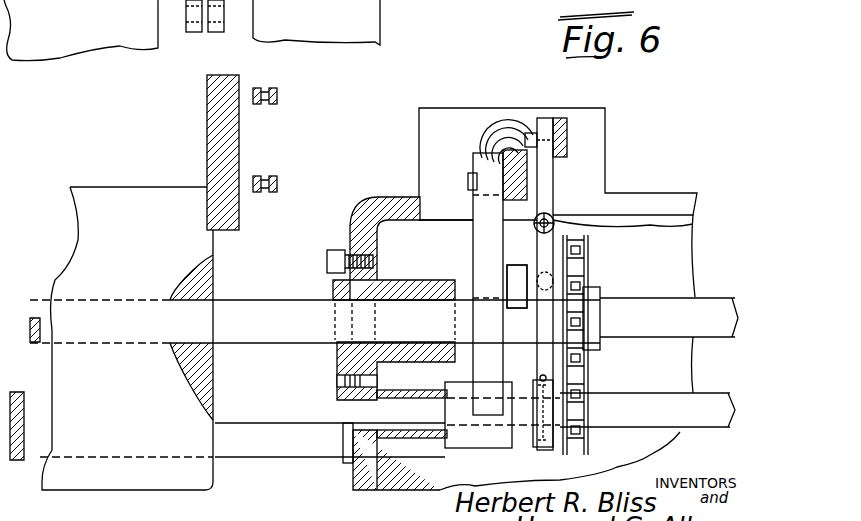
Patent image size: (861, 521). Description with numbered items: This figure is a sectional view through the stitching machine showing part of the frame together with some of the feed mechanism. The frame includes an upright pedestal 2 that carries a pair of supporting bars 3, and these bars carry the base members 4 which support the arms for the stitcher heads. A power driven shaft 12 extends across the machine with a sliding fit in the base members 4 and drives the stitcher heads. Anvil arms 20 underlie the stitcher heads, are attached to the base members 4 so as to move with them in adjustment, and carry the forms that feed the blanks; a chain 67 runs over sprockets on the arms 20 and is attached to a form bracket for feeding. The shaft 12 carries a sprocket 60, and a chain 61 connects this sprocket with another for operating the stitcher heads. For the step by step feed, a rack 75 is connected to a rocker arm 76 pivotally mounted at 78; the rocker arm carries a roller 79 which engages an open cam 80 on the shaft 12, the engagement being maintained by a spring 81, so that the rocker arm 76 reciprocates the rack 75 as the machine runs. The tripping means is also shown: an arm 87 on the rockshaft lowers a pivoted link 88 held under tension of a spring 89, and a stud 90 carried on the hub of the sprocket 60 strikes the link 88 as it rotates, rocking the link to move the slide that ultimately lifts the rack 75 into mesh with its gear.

The upright support or pedestal 2 is at (667, 200).
The supporting bars 3 is at (290, 440).
The base members 4 is at (120, 487).
The power driven shaft 12 is at (263, 300).
The anvil arms 20 is at (207, 110).
The sprocket 60 is at (585, 265).
The chain 61 is at (590, 437).
The chain 67 is at (280, 96).
The rack 75 is at (505, 172).
The rocker arm 76 is at (483, 245).
The pivot of rocker arm 78 is at (440, 415).
The roller 79 is at (520, 312).
The open cam 80 is at (513, 272).
The spring 81 is at (510, 135).
The arm 87 is at (567, 137).
The pivoted link 88 is at (553, 185).
The spring 89 is at (620, 223).
The stud 90 is at (545, 276).